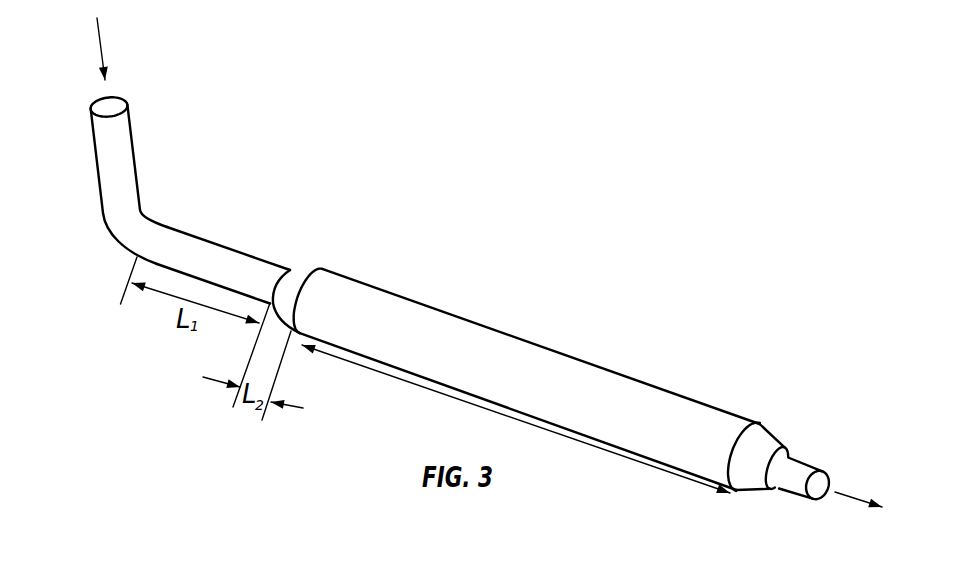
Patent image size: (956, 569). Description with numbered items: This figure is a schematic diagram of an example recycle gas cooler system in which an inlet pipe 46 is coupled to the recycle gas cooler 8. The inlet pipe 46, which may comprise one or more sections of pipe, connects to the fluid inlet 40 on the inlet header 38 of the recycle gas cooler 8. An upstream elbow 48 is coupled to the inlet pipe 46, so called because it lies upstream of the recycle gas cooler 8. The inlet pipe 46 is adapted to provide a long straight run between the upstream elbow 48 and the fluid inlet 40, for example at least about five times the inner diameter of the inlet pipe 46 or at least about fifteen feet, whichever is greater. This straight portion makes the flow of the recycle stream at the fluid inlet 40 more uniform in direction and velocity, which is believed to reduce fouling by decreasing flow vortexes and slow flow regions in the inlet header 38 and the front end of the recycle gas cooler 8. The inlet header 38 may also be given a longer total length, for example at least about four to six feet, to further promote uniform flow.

The recycle gas cooler 8 is at (554, 316).
The inlet header 38 is at (307, 270).
The fluid inlet 40 is at (290, 270).
The inlet pipe 46 is at (182, 232).
The upstream elbow 48 is at (104, 214).